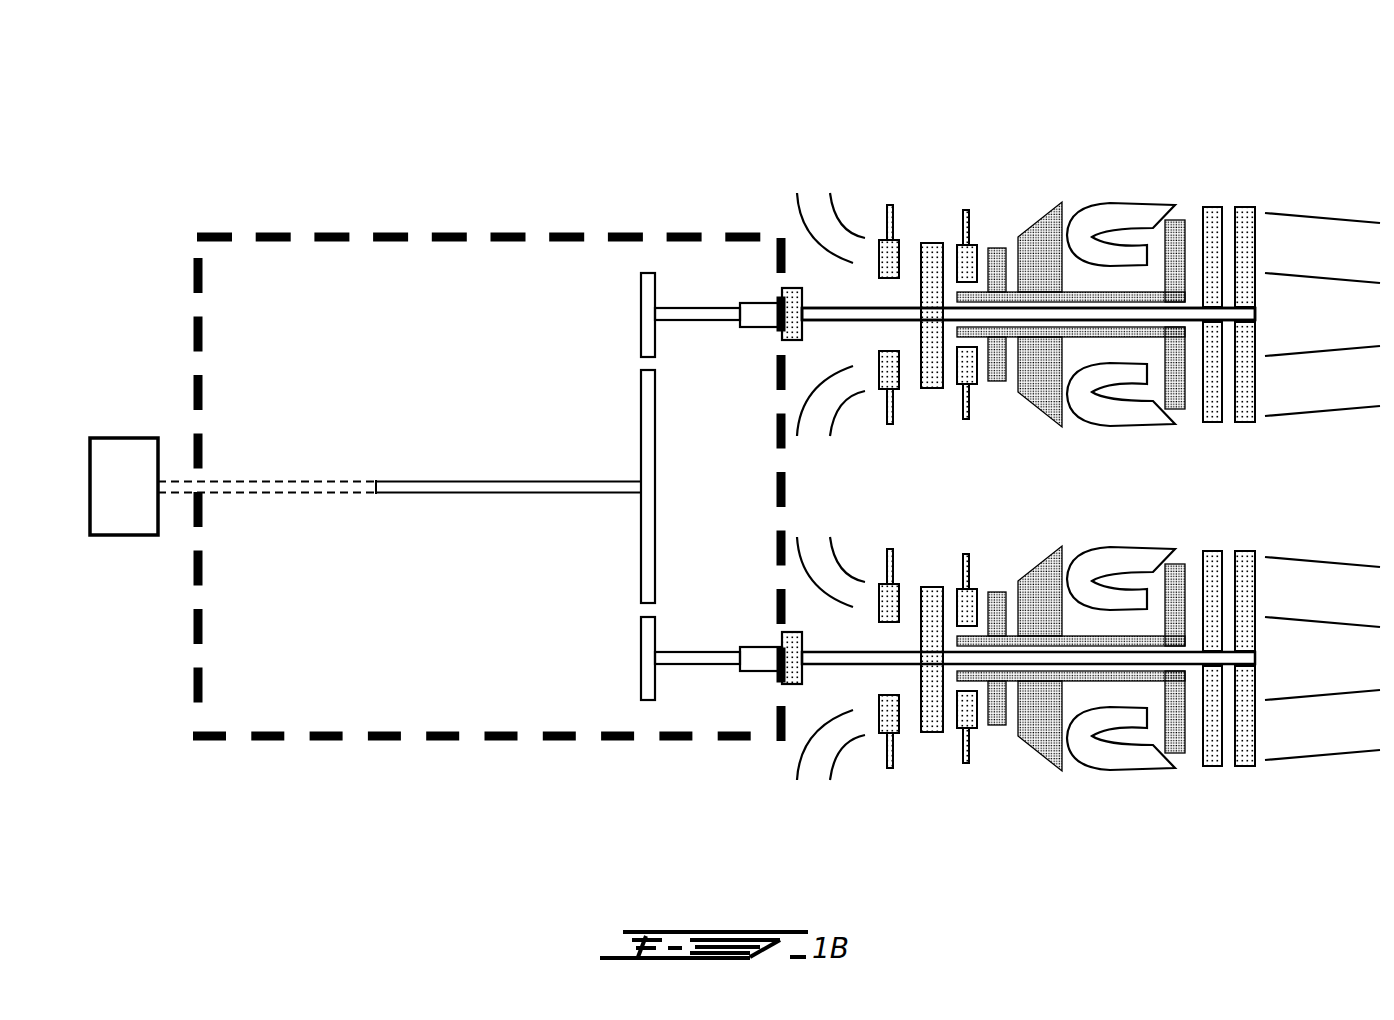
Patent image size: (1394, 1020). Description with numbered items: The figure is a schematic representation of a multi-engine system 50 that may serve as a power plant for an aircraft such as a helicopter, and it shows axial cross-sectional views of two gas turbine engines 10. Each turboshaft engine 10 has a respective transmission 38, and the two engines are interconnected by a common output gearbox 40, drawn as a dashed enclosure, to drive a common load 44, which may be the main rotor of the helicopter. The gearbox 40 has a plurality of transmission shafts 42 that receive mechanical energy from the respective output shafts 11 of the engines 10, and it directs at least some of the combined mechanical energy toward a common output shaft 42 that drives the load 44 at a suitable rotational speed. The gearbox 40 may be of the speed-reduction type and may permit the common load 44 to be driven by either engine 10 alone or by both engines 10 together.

The gas turbine engine 10 is at (1088, 485).
The output shaft 11 is at (833, 308).
The transmission 38 is at (843, 790).
The output gearbox 40 is at (378, 740).
The transmission shaft 42 is at (698, 308).
The common load 44 is at (125, 438).
The multi-engine system 50 is at (265, 145).